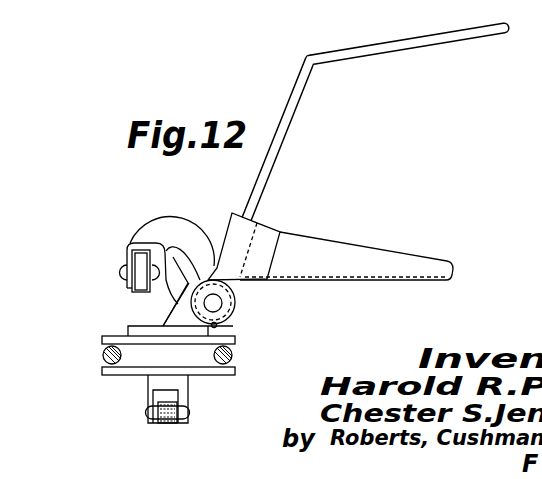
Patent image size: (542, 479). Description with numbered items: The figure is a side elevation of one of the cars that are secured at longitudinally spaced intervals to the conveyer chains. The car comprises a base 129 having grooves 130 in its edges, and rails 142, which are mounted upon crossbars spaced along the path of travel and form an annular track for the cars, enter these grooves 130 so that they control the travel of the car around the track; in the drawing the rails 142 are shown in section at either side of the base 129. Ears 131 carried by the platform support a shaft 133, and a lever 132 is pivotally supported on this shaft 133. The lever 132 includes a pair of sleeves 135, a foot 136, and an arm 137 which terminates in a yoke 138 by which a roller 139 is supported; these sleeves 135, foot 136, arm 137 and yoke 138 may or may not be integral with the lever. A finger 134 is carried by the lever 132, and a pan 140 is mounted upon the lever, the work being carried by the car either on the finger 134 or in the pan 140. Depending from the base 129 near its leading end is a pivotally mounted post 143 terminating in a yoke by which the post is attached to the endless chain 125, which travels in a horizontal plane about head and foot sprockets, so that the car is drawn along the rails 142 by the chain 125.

The endless chain 125 is at (163, 423).
The base 129 is at (163, 328).
The grooves 130 is at (103, 368).
The ears 131 is at (174, 307).
The lever 132 is at (198, 231).
The shaft 133 is at (213, 300).
The finger 134 is at (403, 29).
The sleeves 135 is at (235, 316).
The foot 136 is at (165, 221).
The arm 137 is at (186, 213).
The yoke 138 is at (150, 224).
The roller 139 is at (140, 261).
The pan 140 is at (358, 250).
The rails 142 is at (102, 353).
The post 143 is at (183, 388).